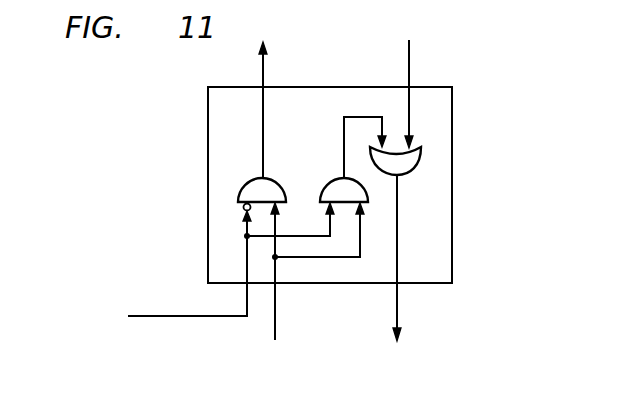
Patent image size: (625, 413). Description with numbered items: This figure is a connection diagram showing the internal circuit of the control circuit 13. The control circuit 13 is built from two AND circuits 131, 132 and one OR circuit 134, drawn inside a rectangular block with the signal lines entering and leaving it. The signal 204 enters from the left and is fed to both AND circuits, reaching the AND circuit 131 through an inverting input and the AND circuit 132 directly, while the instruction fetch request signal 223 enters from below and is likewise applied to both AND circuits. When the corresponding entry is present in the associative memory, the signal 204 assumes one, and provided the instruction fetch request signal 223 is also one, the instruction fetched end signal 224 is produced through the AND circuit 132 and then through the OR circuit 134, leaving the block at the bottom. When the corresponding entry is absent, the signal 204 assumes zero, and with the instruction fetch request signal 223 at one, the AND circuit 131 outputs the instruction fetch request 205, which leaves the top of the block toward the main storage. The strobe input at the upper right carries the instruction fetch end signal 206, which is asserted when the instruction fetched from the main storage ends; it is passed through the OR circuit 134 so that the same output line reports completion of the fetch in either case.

The control circuit 13 is at (452, 173).
The AND circuit 131 is at (246, 178).
The AND circuit 132 is at (326, 186).
The OR circuit 134 is at (410, 176).
The signal 204 is at (192, 318).
The instruction fetch request 205 is at (264, 70).
The instruction fetch end signal 206 is at (410, 62).
The instruction fetch request signal 223 is at (276, 318).
The instruction fetched end signal 224 is at (398, 310).